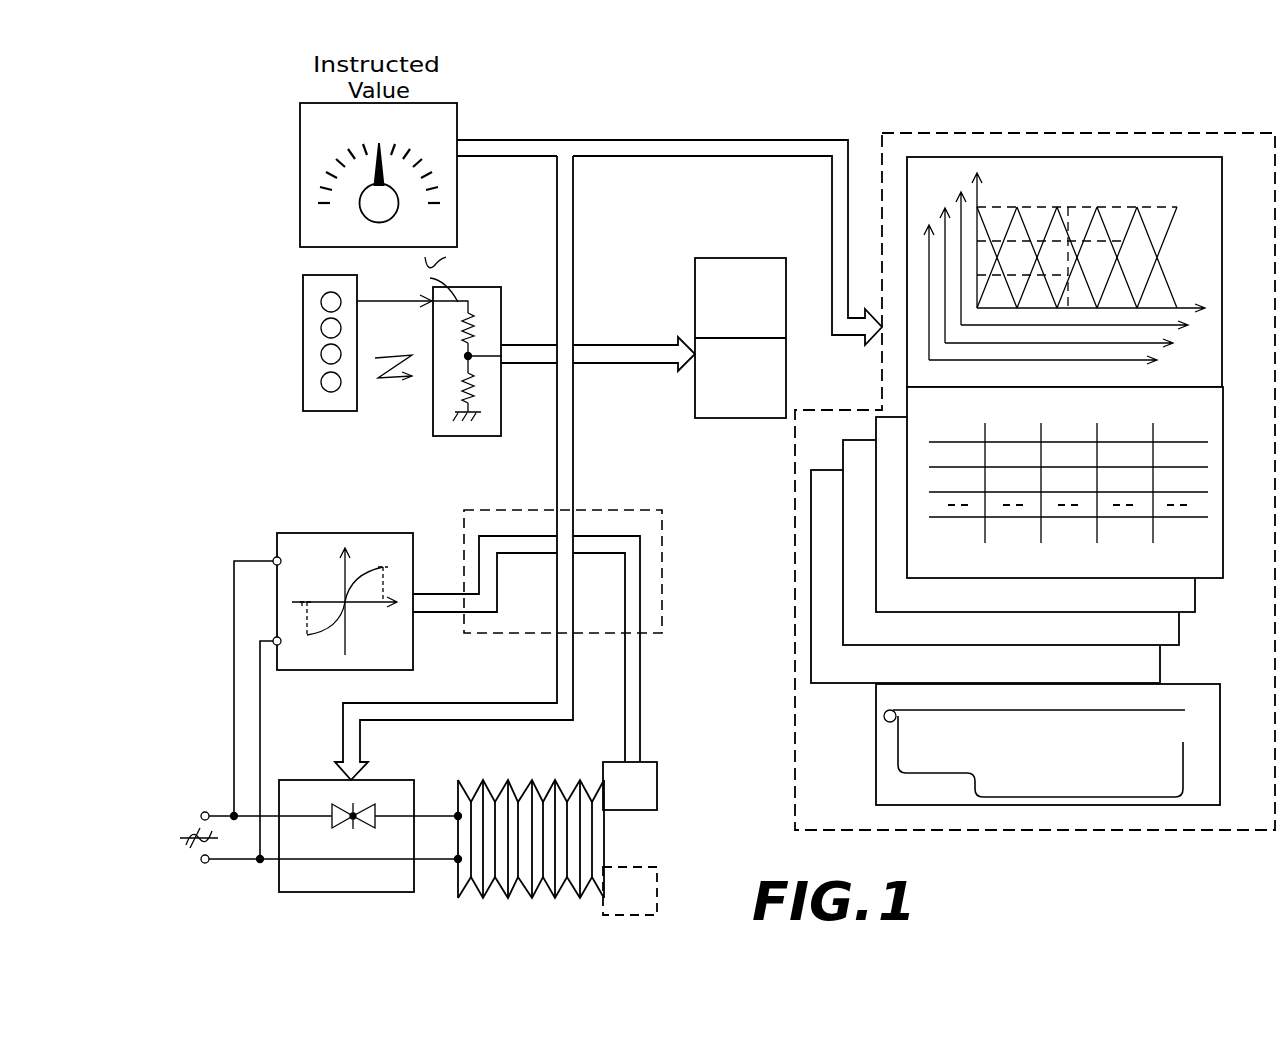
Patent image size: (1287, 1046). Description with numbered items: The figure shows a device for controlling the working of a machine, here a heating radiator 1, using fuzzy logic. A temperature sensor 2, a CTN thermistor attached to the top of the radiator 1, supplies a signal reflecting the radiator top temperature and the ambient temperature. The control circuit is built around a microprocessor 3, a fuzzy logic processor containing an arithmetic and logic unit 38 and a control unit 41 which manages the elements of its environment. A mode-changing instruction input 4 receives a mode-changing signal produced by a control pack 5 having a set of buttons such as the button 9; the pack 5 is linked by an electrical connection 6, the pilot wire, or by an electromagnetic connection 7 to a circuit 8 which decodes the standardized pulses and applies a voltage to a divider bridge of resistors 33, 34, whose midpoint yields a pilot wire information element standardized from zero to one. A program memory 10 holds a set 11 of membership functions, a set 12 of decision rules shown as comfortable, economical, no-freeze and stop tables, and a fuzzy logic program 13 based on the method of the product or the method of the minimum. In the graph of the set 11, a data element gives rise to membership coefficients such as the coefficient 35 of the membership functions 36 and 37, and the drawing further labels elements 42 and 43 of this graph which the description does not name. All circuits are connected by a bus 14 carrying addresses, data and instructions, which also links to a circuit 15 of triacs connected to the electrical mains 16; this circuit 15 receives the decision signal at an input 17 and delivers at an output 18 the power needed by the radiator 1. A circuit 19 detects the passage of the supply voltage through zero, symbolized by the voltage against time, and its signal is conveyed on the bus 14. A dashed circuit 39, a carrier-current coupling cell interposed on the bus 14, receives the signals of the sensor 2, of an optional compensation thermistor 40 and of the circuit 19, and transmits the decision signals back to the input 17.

The radiator 1 is at (505, 790).
The temperature sensor 2 is at (650, 760).
The microprocessor 3 is at (734, 337).
The mode-changing instruction input 4 is at (432, 300).
The control pack 5 is at (302, 341).
The electrical connection 6 is at (367, 308).
The electromagnetic connection 7 is at (380, 380).
The mode-changing instruction circuit 8 is at (485, 338).
The button 9 is at (322, 296).
The program memory 10 is at (1108, 128).
The set of membership functions 11 is at (1083, 272).
The set of decision rules 12 is at (1225, 384).
The fuzzy logic program 13 is at (1200, 762).
The bus 14 is at (568, 150).
The circuit for putting the machine into operation 15 is at (382, 780).
The electrical mains 16 is at (190, 838).
The input 17 is at (346, 777).
The output 18 is at (416, 832).
The zero-crossing detection circuit 19 is at (298, 533).
The resistor of divider bridge 33 is at (476, 326).
The resistor of divider bridge 34 is at (476, 384).
The membership coefficient 35 is at (997, 235).
The membership function 36 is at (1047, 225).
The membership function 37 is at (1080, 227).
The arithmetic and logic unit 38 is at (733, 272).
The coupling cell 39 is at (662, 585).
The compensation thermistor 40 is at (645, 867).
The control unit 41 is at (758, 398).
The axis of membership graph 42 is at (1185, 312).
The membership function 43 is at (985, 227).